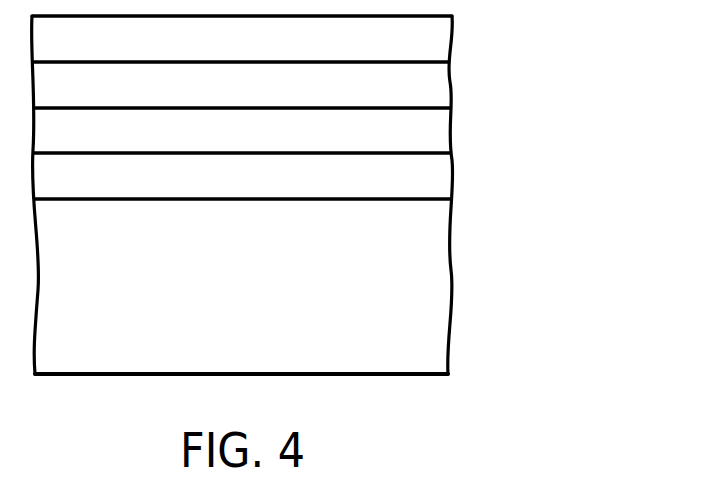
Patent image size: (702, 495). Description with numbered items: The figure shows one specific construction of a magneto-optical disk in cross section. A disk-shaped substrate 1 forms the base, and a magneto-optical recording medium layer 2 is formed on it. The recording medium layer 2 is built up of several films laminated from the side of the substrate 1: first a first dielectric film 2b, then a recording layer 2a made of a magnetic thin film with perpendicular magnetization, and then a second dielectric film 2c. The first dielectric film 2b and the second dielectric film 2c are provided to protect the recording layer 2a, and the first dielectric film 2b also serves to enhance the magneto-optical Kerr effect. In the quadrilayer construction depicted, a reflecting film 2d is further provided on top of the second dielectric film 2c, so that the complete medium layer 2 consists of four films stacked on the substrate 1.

The substrate 1 is at (437, 316).
The magneto-optical recording medium layer 2 is at (311, 109).
The recording layer 2a is at (438, 144).
The first dielectric film 2b is at (285, 176).
The second dielectric film 2c is at (440, 97).
The reflecting film 2d is at (440, 50).